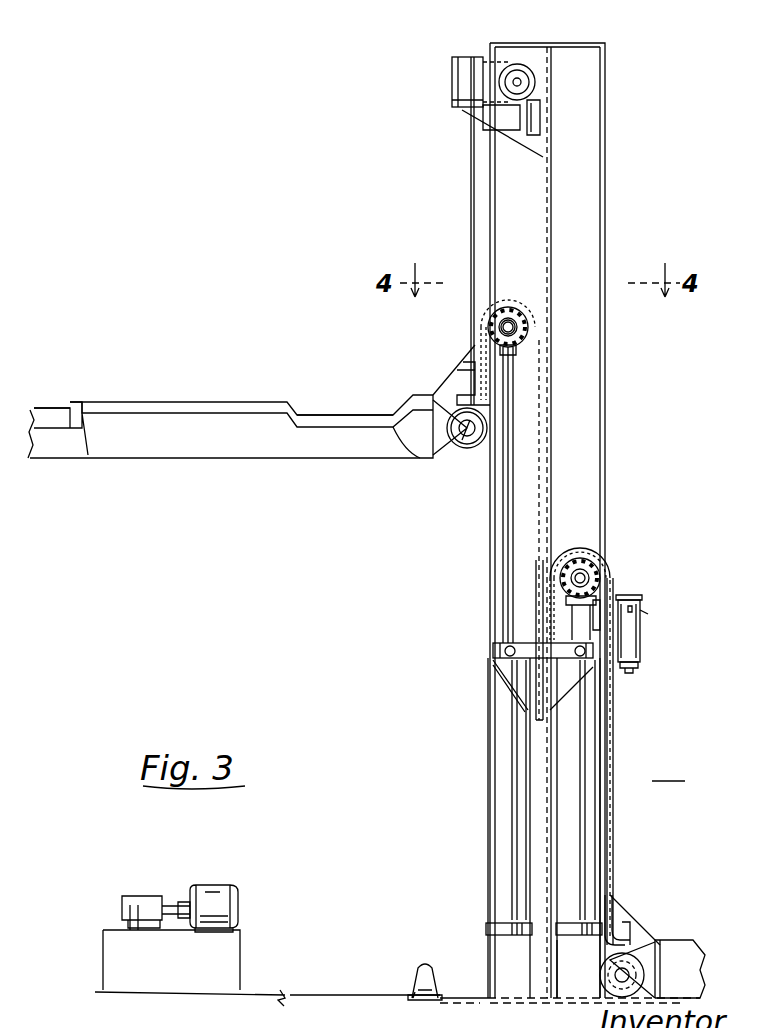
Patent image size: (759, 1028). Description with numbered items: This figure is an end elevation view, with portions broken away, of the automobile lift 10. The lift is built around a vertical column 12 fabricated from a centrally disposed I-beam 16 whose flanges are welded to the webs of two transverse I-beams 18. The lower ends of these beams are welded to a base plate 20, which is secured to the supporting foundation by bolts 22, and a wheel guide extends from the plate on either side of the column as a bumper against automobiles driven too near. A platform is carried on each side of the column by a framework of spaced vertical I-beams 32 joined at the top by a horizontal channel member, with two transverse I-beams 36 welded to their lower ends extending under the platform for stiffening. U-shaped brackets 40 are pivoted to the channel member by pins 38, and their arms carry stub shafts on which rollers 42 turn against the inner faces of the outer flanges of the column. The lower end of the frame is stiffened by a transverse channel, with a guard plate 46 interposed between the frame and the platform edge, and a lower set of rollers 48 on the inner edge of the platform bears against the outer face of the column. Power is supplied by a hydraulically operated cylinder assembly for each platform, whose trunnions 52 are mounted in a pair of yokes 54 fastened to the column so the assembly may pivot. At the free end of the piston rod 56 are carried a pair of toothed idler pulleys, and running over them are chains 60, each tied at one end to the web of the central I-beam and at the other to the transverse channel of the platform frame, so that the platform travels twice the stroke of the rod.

The automobile lift 10 is at (390, 881).
The vertical column 12 is at (607, 277).
The centrally disposed I-beam 16 is at (553, 183).
The transverse I-beam 18 is at (598, 953).
The base plate 20 is at (556, 1000).
The bolt 22 is at (446, 992).
The I-beam 32 is at (614, 838).
The transverse I-beam 36 is at (628, 597).
The pin 38 is at (633, 608).
The U-shaped bracket 40 is at (642, 612).
The roller 42 is at (560, 632).
The guard plate 46 is at (620, 905).
The lower roller 48 is at (612, 983).
The trunnion 52 is at (576, 658).
The yoke 54 is at (562, 680).
The rod 56 is at (506, 540).
The chain 60 is at (505, 300).